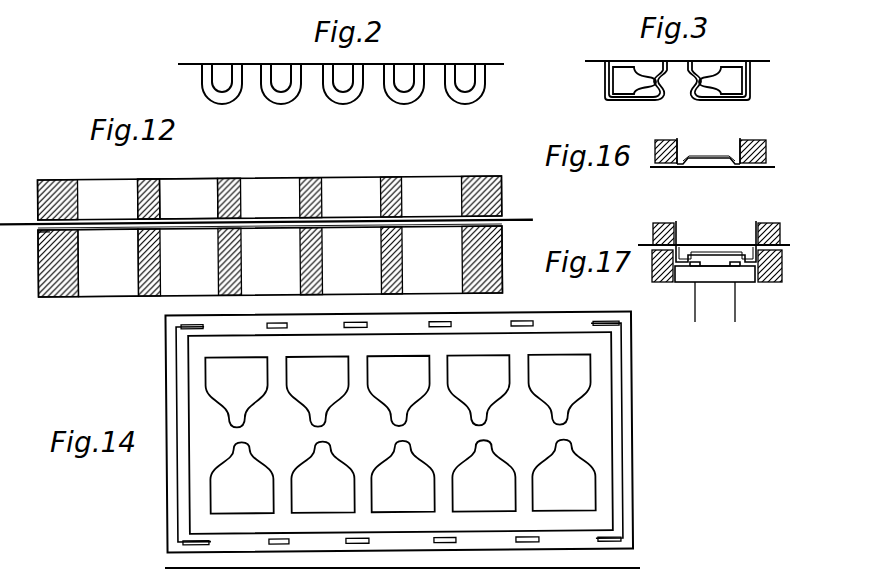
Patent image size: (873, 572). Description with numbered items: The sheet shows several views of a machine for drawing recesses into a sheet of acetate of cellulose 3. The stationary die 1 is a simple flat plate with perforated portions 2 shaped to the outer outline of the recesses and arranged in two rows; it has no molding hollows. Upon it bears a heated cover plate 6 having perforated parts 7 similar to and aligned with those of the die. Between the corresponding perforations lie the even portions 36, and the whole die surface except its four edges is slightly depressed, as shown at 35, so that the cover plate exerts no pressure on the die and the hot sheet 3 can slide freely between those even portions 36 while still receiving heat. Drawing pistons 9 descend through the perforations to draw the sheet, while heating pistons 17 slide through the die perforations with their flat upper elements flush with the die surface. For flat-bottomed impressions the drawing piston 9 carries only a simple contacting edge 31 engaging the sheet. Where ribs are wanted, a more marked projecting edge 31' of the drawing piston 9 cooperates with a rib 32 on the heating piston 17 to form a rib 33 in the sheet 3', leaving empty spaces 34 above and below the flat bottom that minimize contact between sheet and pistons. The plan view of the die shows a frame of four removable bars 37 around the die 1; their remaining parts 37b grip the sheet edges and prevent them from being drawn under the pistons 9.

In FIG. 12, the stationary die 1 is at (61, 295).
In FIG. 12, the perforated portions 2 is at (172, 288).
In FIG. 12, the sheet of acetate of cellulose 3 is at (266, 215).
In FIG. 16, the sheet of acetate of cellulose 3 is at (712, 183).
In FIG. 17, the thermoplastic sheet 3' is at (710, 255).
In FIG. 12, the cover plate 6 is at (55, 192).
In FIG. 12, the perforated parts 7 is at (197, 194).
In FIG. 16, the drawing pistons 9 is at (692, 150).
In FIG. 17, the drawing pistons 9 is at (704, 242).
In FIG. 17, the heating pistons 17 is at (732, 309).
In FIG. 16, the contacting edge 31 is at (710, 169).
In FIG. 17, the projecting edge 31' is at (716, 234).
In FIG. 17, the rib 32 is at (698, 272).
In FIG. 17, the rib 33 is at (683, 268).
In FIG. 17, the empty spaces 34 is at (736, 252).
In FIG. 12, the depression 35 is at (44, 233).
In FIG. 14, the depression 35 is at (610, 416).
In FIG. 12, the even portions 36 is at (155, 184).
In FIG. 14, the removable bars 37 is at (178, 424).
In FIG. 14, the parts of the bar 37b is at (445, 320).